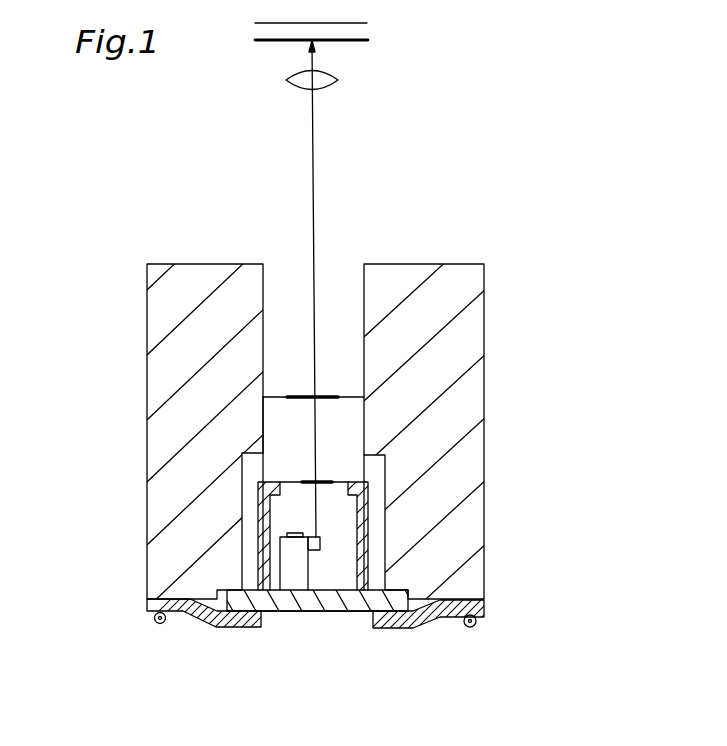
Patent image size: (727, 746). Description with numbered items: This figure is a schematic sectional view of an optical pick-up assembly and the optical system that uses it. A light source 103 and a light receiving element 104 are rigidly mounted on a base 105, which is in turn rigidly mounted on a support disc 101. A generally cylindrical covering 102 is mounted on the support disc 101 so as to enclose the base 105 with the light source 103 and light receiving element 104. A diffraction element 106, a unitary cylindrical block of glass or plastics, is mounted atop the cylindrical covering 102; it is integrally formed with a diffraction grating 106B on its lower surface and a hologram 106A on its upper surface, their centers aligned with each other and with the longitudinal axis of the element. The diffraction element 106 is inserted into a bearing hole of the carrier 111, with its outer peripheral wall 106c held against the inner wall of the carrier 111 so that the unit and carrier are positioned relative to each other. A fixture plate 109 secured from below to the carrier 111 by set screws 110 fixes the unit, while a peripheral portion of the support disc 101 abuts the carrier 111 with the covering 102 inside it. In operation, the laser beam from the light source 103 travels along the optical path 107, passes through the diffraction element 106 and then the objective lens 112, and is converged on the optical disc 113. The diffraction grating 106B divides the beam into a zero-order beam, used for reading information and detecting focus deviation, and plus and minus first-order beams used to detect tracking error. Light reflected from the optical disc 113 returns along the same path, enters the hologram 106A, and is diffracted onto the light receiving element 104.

The support disc 101 is at (352, 607).
The cylindrical covering 102 is at (370, 523).
The light source 103 is at (313, 552).
The light receiving element 104 is at (283, 530).
The base 105 is at (292, 578).
The diffraction element 106 is at (350, 423).
The hologram 106A is at (296, 528).
The diffraction grating 106B is at (330, 481).
The outer peripheral wall 106c is at (263, 413).
The optical path 107 is at (312, 152).
The fixture plate 109 is at (477, 605).
The set screws 110 is at (477, 628).
The carrier 111 is at (197, 272).
The objective lens 112 is at (328, 85).
The optical disc 113 is at (363, 33).